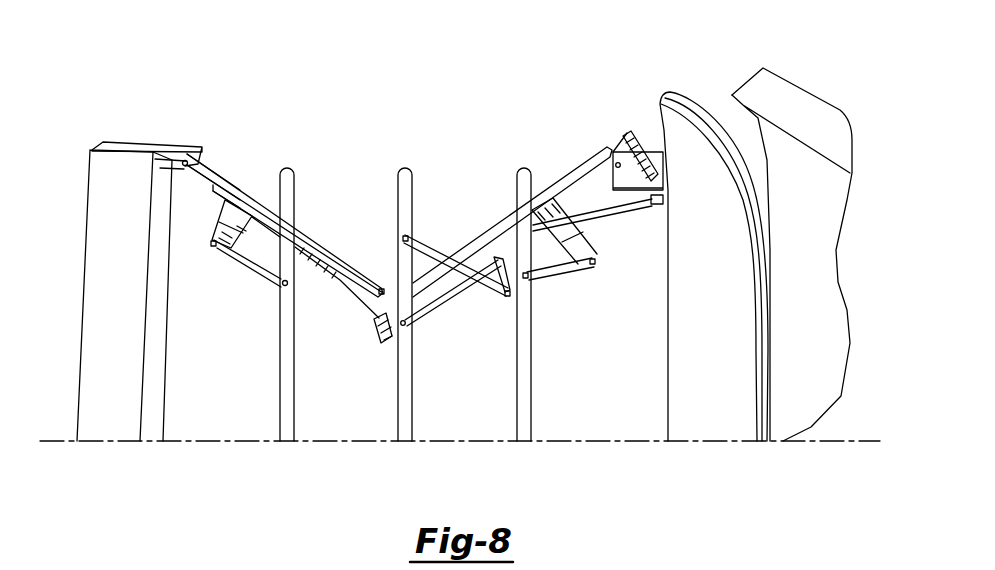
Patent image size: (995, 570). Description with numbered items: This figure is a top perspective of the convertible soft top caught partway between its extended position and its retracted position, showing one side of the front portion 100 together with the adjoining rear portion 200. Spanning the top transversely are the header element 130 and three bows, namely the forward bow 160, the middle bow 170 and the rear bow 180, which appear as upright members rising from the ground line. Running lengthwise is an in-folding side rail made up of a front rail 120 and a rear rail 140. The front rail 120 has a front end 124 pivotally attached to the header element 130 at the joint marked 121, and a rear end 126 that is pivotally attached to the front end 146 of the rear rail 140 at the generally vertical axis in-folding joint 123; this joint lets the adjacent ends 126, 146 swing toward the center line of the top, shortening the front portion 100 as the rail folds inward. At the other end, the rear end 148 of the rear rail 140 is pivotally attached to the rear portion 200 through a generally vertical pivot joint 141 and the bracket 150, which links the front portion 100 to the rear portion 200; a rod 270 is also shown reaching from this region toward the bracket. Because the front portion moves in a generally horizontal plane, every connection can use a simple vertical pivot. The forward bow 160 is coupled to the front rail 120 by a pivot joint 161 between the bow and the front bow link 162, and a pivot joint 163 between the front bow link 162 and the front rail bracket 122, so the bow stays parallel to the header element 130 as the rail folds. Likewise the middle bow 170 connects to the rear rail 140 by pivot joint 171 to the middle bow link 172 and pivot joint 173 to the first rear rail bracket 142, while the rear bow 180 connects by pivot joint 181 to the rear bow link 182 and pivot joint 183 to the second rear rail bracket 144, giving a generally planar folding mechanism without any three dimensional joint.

The front portion 100 is at (366, 82).
The front rail 120 is at (328, 247).
The upper pivot of first arm 121 is at (182, 158).
The front rail bracket 122 is at (232, 220).
The in-folding joint 123 is at (401, 327).
The front end 124 is at (212, 158).
The rear end 126 is at (383, 288).
The header element 130 is at (129, 280).
The rear rail 140 is at (511, 223).
The pivot joint 141 is at (640, 148).
The first rear rail bracket 142 is at (493, 268).
The second rear rail bracket 144 is at (563, 217).
The front end 146 is at (375, 318).
The rear end 148 is at (615, 152).
The bracket 150 is at (664, 175).
The forward bow 160 is at (287, 389).
The pivot joint 161 is at (281, 285).
The front bow link 162 is at (243, 268).
The pivot joint 163 is at (210, 248).
The middle bow 170 is at (402, 394).
The pivot joint 171 is at (411, 236).
The middle bow link 172 is at (476, 290).
The pivot joint 173 is at (505, 297).
The rear bow 180 is at (522, 396).
The pivot joint 181 is at (532, 281).
The rear bow link 182 is at (560, 278).
The pivot joint 183 is at (598, 267).
The rear portion 200 is at (709, 340).
The rod 270 is at (596, 216).